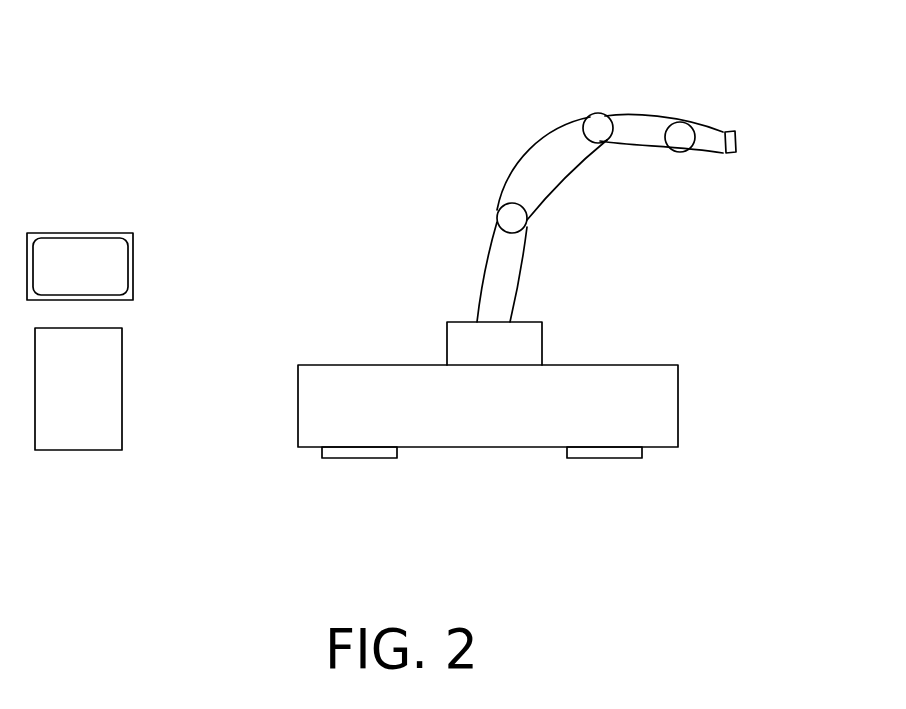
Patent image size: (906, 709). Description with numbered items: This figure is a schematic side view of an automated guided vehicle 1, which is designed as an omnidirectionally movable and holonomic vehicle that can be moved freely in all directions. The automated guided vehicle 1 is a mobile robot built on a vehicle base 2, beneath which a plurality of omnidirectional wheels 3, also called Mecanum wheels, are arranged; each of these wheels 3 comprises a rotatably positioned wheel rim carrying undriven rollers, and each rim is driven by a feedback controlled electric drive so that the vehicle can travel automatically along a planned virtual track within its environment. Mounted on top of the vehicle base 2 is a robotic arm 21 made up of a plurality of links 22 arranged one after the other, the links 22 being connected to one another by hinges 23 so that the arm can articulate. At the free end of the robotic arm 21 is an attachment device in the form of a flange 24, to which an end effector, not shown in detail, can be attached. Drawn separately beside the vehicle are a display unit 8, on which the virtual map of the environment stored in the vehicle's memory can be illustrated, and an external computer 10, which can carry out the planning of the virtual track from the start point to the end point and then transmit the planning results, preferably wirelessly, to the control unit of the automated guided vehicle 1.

The automated guided vehicle 1 is at (352, 183).
The vehicle base 2 is at (486, 411).
The omnidirectional wheels 3 is at (583, 450).
The display unit 8 is at (88, 276).
The external computer 10 is at (94, 395).
The robotic arm 21 is at (650, 259).
The links 22 is at (523, 178).
The hinges 23 is at (510, 227).
The flange 24 is at (737, 138).